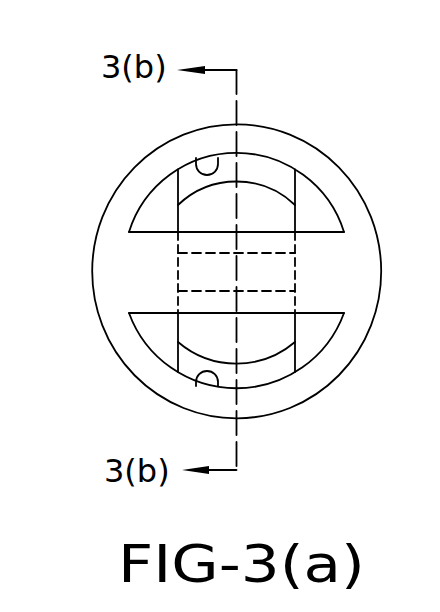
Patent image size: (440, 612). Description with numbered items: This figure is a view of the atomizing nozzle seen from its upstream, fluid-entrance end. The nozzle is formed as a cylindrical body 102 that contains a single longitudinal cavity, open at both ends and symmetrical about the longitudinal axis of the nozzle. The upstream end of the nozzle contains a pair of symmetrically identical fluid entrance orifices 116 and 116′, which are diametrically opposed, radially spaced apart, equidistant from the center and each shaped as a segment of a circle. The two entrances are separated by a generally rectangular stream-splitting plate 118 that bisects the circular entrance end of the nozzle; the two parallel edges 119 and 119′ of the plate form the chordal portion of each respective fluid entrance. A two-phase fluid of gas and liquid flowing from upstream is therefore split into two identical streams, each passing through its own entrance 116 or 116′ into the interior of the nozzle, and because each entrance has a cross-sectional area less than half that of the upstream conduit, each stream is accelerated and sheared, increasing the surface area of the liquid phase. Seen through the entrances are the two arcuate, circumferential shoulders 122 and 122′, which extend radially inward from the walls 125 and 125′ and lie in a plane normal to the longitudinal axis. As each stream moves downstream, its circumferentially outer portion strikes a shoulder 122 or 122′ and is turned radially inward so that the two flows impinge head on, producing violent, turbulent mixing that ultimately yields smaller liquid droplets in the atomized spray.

The cylindrical body 102 is at (362, 348).
The stream-splitting plate 118 is at (117, 282).
The fluid entrance orifice 116 is at (312, 212).
The fluid entrance orifice 116′ is at (170, 348).
The parallel edge of stream-splitting plate 119 is at (160, 231).
The parallel edge of stream-splitting plate 119′ is at (166, 350).
The arcuate circumferential shoulder 122 is at (243, 166).
The arcuate circumferential shoulder 122′ is at (247, 378).
The wall 125 is at (193, 165).
The wall 125′ is at (210, 394).